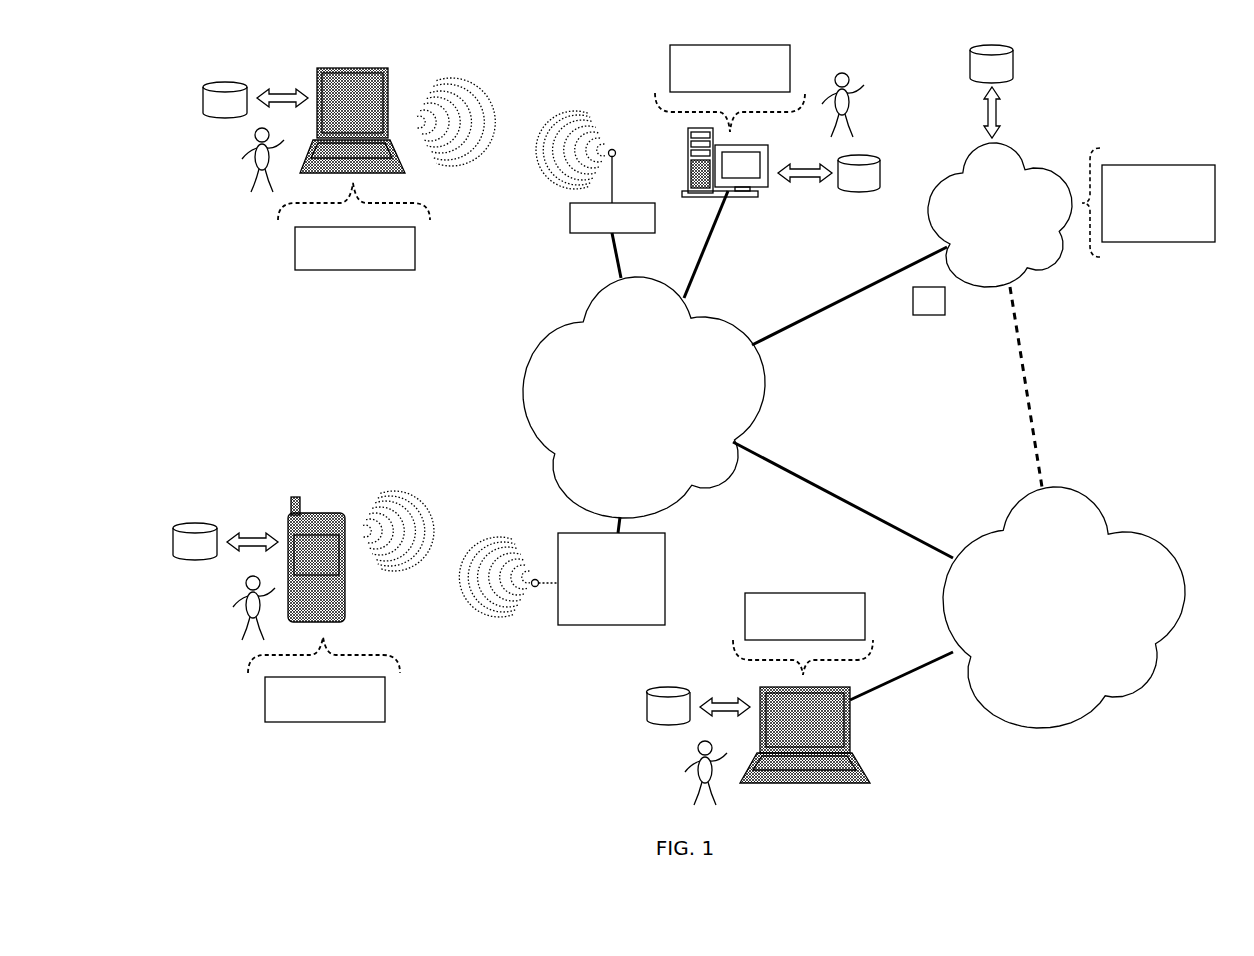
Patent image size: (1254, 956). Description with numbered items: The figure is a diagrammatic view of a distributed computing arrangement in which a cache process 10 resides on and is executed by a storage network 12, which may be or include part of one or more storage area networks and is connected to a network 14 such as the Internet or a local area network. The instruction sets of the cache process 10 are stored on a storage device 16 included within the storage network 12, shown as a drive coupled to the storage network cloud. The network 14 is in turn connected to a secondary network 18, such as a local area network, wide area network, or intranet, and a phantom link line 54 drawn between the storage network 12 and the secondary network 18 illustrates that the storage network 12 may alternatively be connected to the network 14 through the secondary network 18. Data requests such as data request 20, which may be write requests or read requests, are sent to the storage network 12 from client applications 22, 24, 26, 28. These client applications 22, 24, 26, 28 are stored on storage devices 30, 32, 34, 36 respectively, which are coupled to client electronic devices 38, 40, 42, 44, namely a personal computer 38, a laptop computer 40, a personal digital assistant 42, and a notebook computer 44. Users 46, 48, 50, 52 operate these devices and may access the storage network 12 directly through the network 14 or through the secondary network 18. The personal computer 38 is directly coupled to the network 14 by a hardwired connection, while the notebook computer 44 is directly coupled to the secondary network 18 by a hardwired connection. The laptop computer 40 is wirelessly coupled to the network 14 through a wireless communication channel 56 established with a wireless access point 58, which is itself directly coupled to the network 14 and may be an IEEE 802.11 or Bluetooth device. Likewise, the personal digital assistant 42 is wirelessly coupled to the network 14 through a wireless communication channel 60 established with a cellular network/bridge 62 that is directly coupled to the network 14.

The cache process 10 is at (1215, 195).
The storage network 12 is at (1000, 215).
The network 14 is at (644, 397).
The storage device 16 is at (991, 64).
The secondary network 18 is at (1064, 607).
The data request 20 is at (945, 300).
The client application 22 is at (790, 72).
The client application 24 is at (415, 248).
The client application 26 is at (385, 698).
The client application 28 is at (865, 615).
The storage device 30 is at (859, 173).
The storage device 32 is at (225, 100).
The storage device 34 is at (195, 541).
The storage device 36 is at (669, 706).
The personal computer 38 is at (768, 162).
The laptop computer 40 is at (385, 92).
The personal digital assistant 42 is at (345, 567).
The notebook computer 44 is at (851, 728).
The user 46 is at (858, 88).
The user 48 is at (230, 152).
The user 50 is at (233, 590).
The user 52 is at (672, 765).
The phantom link line 54 is at (1022, 375).
The wireless communication channel 56 is at (522, 107).
The wireless access point 58 is at (568, 221).
The wireless communication channel 60 is at (457, 533).
The cellular network/bridge 62 is at (665, 548).